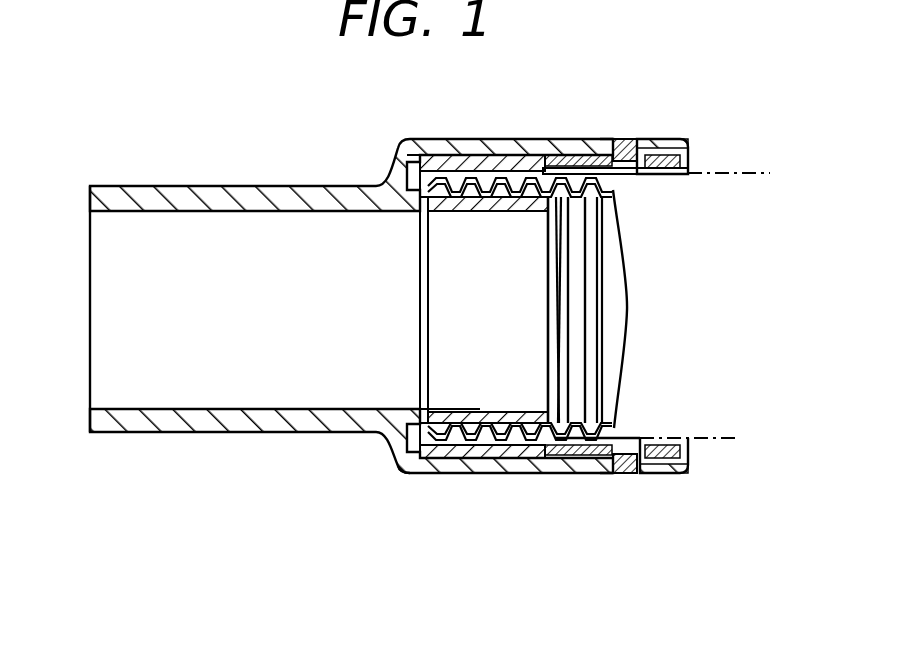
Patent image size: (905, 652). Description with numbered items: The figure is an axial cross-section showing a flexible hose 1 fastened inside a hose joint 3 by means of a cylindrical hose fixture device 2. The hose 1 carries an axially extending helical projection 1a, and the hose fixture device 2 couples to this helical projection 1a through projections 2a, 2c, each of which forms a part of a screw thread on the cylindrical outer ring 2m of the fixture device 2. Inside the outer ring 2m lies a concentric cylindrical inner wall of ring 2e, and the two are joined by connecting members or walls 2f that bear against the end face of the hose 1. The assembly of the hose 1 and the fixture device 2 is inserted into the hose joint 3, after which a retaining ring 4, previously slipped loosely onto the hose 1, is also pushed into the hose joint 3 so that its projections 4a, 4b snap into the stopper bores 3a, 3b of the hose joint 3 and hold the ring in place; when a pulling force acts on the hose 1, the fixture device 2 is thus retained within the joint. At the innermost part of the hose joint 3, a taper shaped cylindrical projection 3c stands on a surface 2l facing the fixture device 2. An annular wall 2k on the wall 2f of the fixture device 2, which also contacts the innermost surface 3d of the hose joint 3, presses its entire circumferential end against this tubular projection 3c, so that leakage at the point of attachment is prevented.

The flexible hose 1 is at (742, 173).
The helical projection 1a is at (595, 432).
The hose fixture device 2 is at (458, 474).
The projection 2a is at (518, 205).
The projection 2c is at (506, 425).
The inner wall of ring 2e is at (470, 408).
The connecting member or wall 2f is at (412, 442).
The annular wall 2k is at (412, 408).
The surface opposite the hose fixture device 2l is at (408, 152).
The outer ring 2m is at (498, 152).
The hose joint 3 is at (203, 187).
The stopper bore 3a is at (608, 139).
The stopper bore 3b is at (612, 474).
The taper shaped cylindrical projection 3c is at (404, 206).
The innermost surface 3d is at (407, 474).
The retaining ring 4 is at (554, 155).
The projection 4a is at (628, 139).
The projection 4b is at (630, 474).